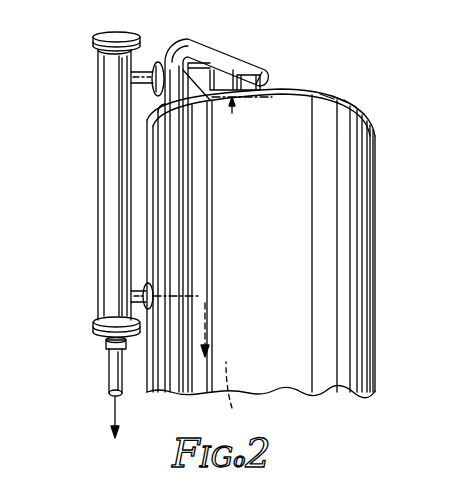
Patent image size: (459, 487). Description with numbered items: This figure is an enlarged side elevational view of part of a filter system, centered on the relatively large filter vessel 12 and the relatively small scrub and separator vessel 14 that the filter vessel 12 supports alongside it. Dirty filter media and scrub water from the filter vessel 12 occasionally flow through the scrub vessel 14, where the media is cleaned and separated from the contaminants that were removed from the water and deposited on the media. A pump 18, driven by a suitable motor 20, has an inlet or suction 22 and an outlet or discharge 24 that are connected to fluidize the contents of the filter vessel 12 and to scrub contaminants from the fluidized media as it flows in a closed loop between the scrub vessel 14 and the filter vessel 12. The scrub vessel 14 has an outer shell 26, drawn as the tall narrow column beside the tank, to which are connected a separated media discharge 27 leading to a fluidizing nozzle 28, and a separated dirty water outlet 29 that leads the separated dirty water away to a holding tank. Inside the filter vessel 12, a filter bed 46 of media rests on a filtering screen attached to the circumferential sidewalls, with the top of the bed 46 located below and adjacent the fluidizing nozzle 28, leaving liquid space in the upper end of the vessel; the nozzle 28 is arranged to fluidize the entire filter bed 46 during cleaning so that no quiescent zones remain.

The filter vessel 12 is at (302, 81).
The scrub and separator vessel 14 is at (90, 97).
The pump 18 is at (221, 204).
The motor 20 is at (210, 55).
The inlet or suction 22 is at (242, 100).
The outlet or discharge 24 is at (163, 62).
The outer shell 26 is at (112, 173).
The separated media discharge 27 is at (131, 290).
The fluidizing nozzle 28 is at (205, 302).
The separated dirty water outlet 29 is at (113, 405).
The filter bed 46 is at (232, 406).